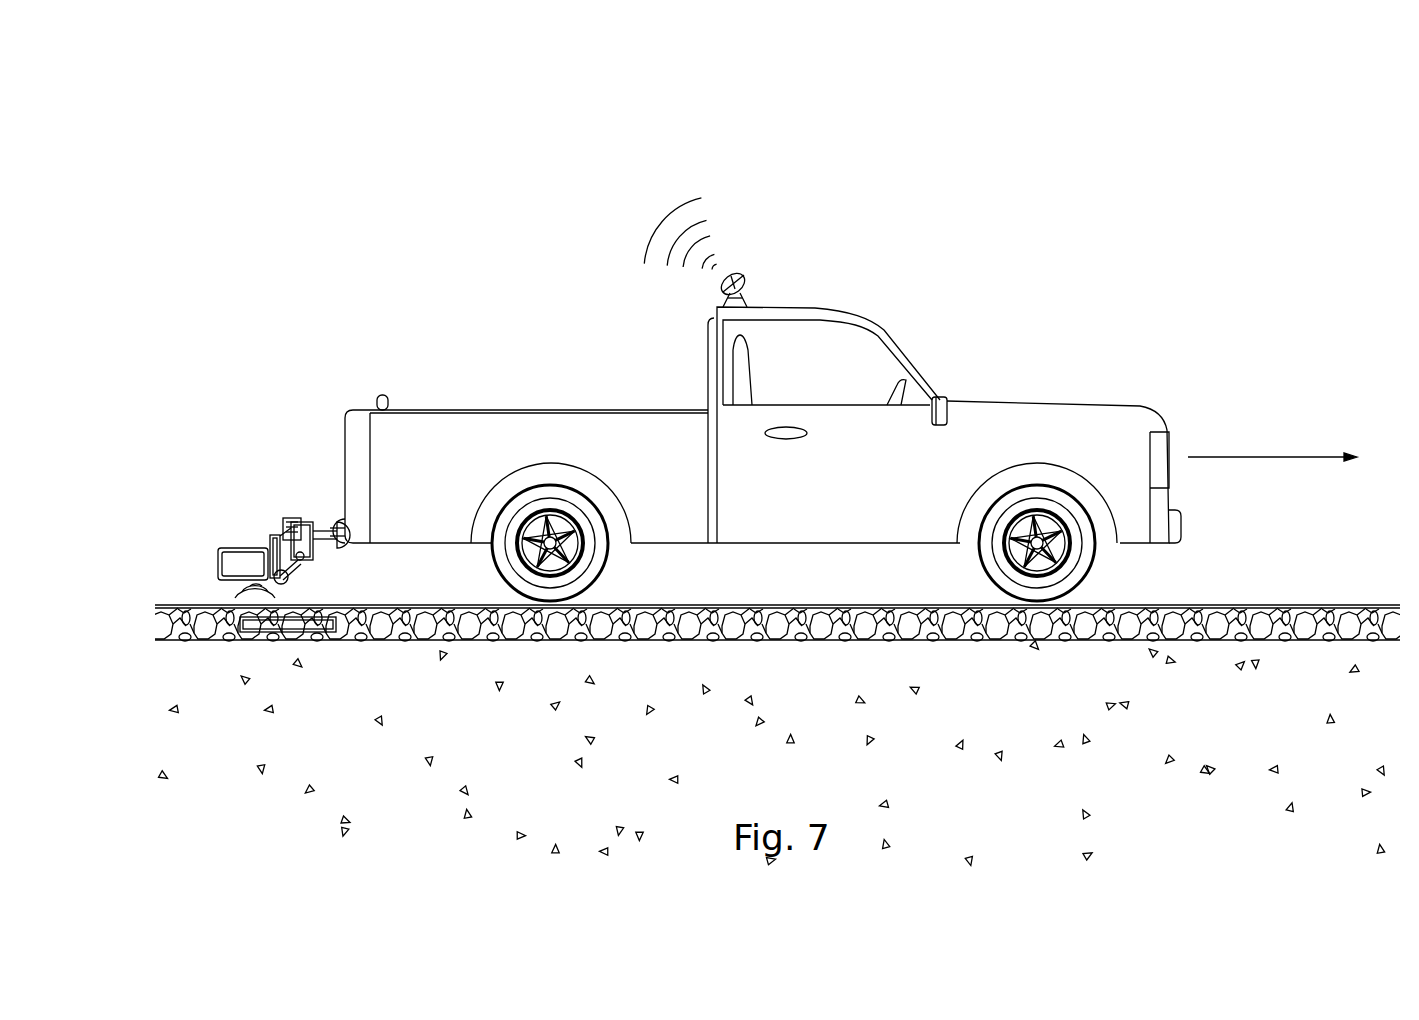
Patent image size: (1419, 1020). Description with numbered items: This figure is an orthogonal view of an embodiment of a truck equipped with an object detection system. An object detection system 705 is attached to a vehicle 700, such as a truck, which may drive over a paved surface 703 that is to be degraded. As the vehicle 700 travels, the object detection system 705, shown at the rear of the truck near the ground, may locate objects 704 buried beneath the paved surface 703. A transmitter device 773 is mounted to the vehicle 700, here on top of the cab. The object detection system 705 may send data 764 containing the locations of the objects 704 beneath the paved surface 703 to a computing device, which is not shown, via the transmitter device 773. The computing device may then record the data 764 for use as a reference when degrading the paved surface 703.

The vehicle 700 is at (843, 331).
The data 764 is at (700, 197).
The transmitter device 773 is at (745, 277).
The object detection system 705 is at (244, 500).
The objects 704 is at (322, 638).
The paved surface 703 is at (1130, 638).